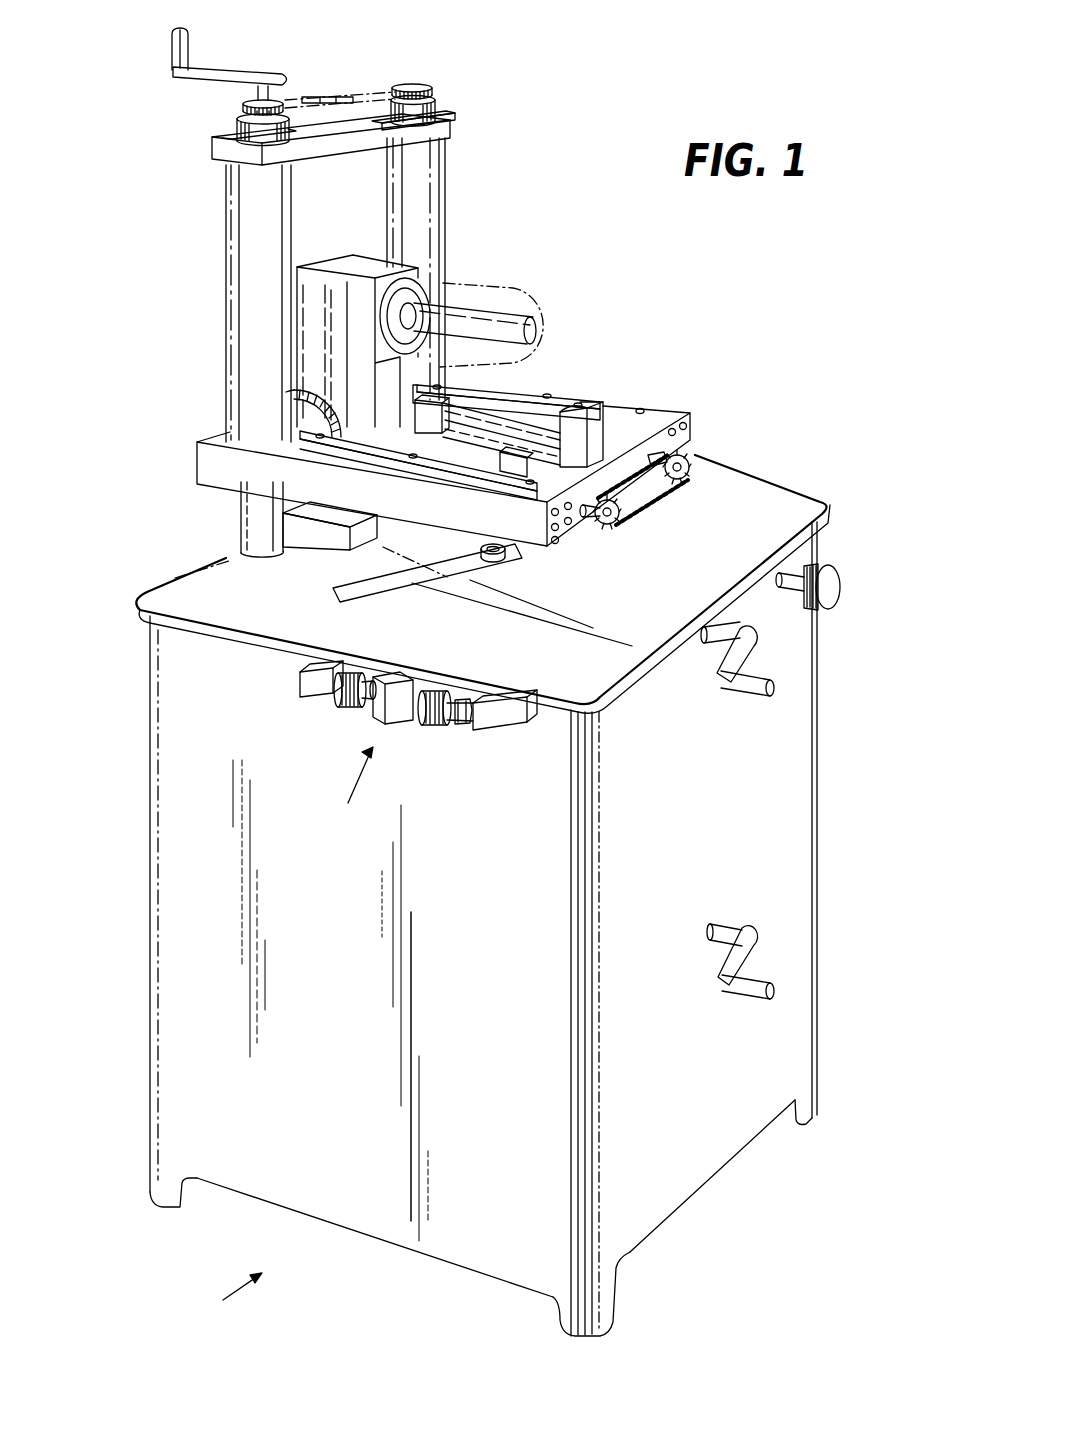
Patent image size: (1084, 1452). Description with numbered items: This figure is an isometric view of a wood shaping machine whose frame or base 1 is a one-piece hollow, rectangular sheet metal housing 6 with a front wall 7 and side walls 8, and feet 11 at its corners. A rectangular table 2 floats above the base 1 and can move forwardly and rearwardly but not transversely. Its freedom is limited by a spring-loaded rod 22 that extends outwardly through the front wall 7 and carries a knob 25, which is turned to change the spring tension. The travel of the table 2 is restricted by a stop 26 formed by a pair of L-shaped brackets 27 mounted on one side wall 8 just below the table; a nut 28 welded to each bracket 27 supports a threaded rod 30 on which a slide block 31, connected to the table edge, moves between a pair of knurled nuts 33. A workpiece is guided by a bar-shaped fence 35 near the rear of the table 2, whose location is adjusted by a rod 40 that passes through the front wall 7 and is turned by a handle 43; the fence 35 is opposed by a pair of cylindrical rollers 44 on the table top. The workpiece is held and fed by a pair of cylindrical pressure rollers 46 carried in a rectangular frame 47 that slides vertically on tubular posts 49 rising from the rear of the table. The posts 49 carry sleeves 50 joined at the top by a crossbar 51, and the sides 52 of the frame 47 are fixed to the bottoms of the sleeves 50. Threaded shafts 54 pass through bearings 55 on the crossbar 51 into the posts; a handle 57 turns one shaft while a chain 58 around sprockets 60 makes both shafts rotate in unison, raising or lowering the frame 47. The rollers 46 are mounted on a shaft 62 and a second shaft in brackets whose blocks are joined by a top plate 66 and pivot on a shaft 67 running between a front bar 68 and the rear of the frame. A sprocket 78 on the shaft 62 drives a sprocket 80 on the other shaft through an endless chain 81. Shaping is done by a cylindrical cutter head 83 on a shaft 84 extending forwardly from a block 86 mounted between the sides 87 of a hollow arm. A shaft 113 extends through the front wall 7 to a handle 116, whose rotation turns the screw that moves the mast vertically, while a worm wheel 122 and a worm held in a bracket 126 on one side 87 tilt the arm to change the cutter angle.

The base 1 is at (232, 1300).
The table 2 is at (547, 673).
The housing 6 is at (150, 866).
The front wall 7 is at (665, 889).
The side walls 8 is at (320, 1079).
The feet 11 is at (190, 1200).
The rod 22 is at (800, 577).
The knob 25 is at (830, 590).
The stop 26 is at (350, 791).
The L-shaped brackets 27 is at (293, 675).
The nut 28 is at (317, 697).
The threaded rod 30 is at (457, 703).
The block 31 is at (392, 720).
The knurled nuts 33 is at (343, 713).
The fence 35 is at (377, 578).
The rod 40 is at (710, 633).
The handle 43 is at (740, 688).
The cylindrical rollers 44 is at (497, 557).
The pressure rollers 46 is at (527, 385).
The frame 47 is at (690, 413).
The tubular posts 49 is at (257, 525).
The sleeves 50 is at (248, 243).
The crossbar 51 is at (347, 127).
The sides 52 is at (220, 467).
The shafts 54 is at (240, 115).
The bearings 55 is at (233, 140).
The handle 57 is at (177, 43).
The chain 58 is at (320, 92).
The sprockets 60 is at (243, 100).
The shaft 62 is at (610, 417).
The top plate 66 is at (530, 400).
The shaft 67 is at (590, 420).
The bar 68 is at (697, 428).
The sprocket 78 is at (690, 465).
The sprocket 80 is at (615, 522).
The endless chain 81 is at (667, 497).
The cutter head 83 is at (530, 290).
The shaft 84 is at (490, 300).
The block 86 is at (425, 285).
The sides 87 is at (378, 257).
The shaft 113 is at (723, 927).
The handle 116 is at (740, 990).
The worm wheel 122 is at (303, 413).
The bracket 126 is at (293, 545).